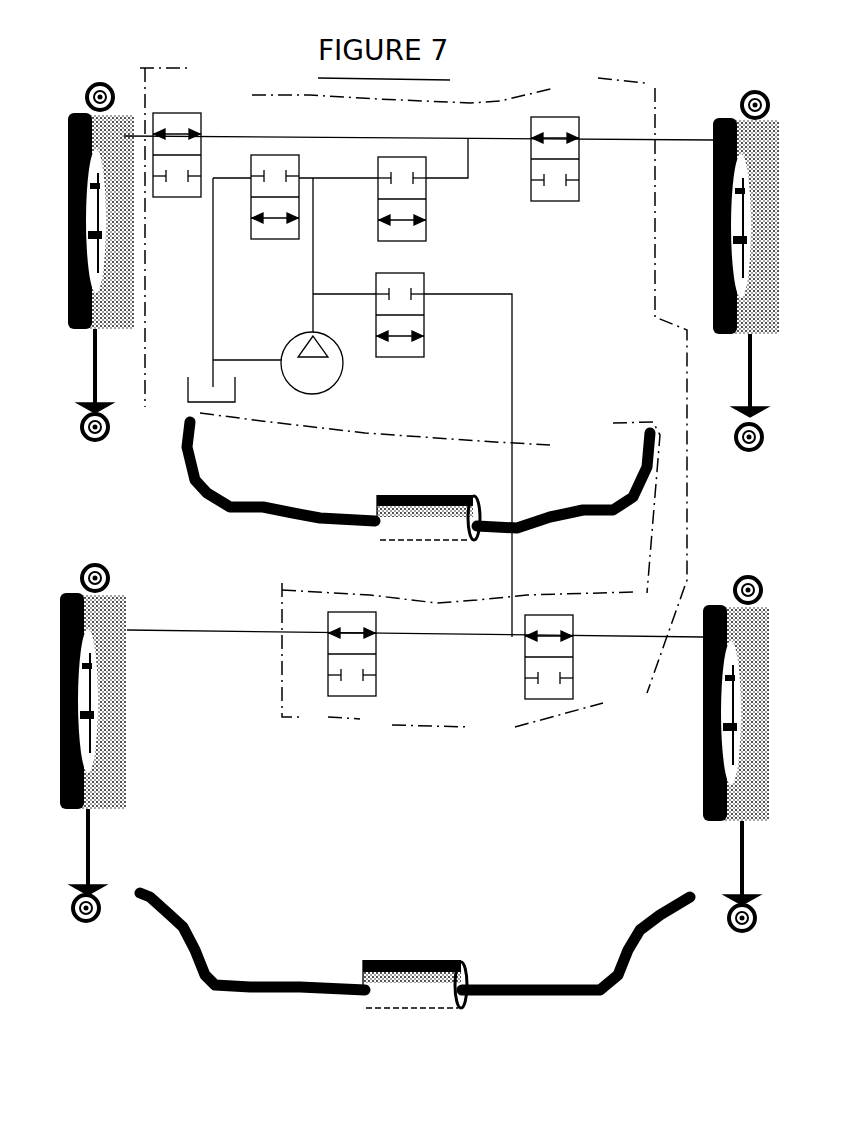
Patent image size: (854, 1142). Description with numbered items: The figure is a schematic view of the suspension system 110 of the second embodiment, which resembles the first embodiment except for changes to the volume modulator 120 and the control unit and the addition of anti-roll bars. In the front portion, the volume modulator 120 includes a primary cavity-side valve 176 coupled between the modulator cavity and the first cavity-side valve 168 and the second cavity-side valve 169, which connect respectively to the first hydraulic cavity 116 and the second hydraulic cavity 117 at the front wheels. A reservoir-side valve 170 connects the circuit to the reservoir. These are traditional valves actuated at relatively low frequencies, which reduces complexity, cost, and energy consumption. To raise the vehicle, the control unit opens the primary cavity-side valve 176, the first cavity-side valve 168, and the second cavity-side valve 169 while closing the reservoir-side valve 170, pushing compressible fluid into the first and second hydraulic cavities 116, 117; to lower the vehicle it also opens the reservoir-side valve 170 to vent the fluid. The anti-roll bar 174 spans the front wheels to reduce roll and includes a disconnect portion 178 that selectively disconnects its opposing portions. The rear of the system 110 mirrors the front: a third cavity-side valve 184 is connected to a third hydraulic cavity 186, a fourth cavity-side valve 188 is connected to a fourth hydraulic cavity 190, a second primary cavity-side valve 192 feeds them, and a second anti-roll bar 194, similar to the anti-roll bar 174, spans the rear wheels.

The suspension system 110 is at (550, 62).
The volume modulator 120 is at (257, 90).
The first hydraulic cavity 116 is at (85, 210).
The second hydraulic cavity 117 is at (727, 217).
The first cavity-side valve 168 is at (198, 112).
The second cavity-side valve 169 is at (583, 124).
The reservoir-side valve 170 is at (251, 232).
The primary cavity-side valve 176 is at (426, 232).
The second primary cavity-side valve 192 is at (424, 357).
The anti-roll bar 174 is at (587, 505).
The disconnect portion 178 is at (427, 532).
The third cavity-side valve 184 is at (322, 682).
The fourth cavity-side valve 188 is at (573, 690).
The third hydraulic cavity 186 is at (115, 687).
The fourth hydraulic cavity 190 is at (703, 712).
The second anti-roll bar 194 is at (517, 997).